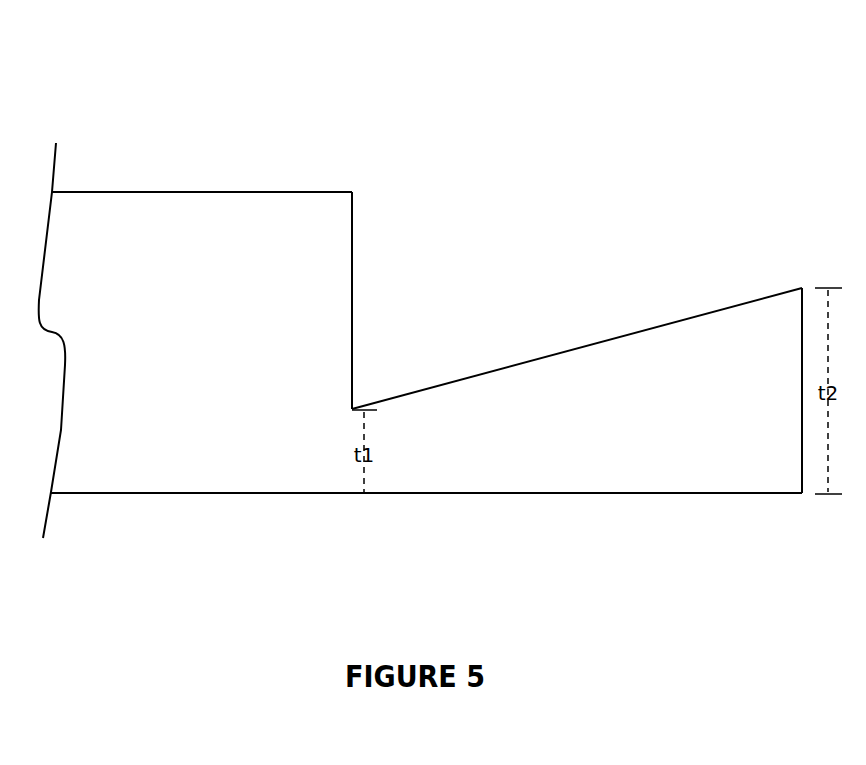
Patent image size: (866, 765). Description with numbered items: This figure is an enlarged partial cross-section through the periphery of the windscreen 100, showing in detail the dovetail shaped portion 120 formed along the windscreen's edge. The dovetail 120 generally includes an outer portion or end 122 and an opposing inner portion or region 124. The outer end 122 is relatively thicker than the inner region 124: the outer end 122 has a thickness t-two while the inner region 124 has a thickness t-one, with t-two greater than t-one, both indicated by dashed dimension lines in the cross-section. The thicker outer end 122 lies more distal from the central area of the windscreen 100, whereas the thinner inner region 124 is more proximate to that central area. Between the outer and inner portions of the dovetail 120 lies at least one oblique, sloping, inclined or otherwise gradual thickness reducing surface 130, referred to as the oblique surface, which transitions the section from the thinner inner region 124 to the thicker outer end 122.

The windscreen 100 is at (73, 76).
The dovetail shaped portion 120 is at (625, 583).
The outer portion or end 122 is at (802, 418).
The inner portion or region 124 is at (345, 453).
The oblique surface 130 is at (603, 341).